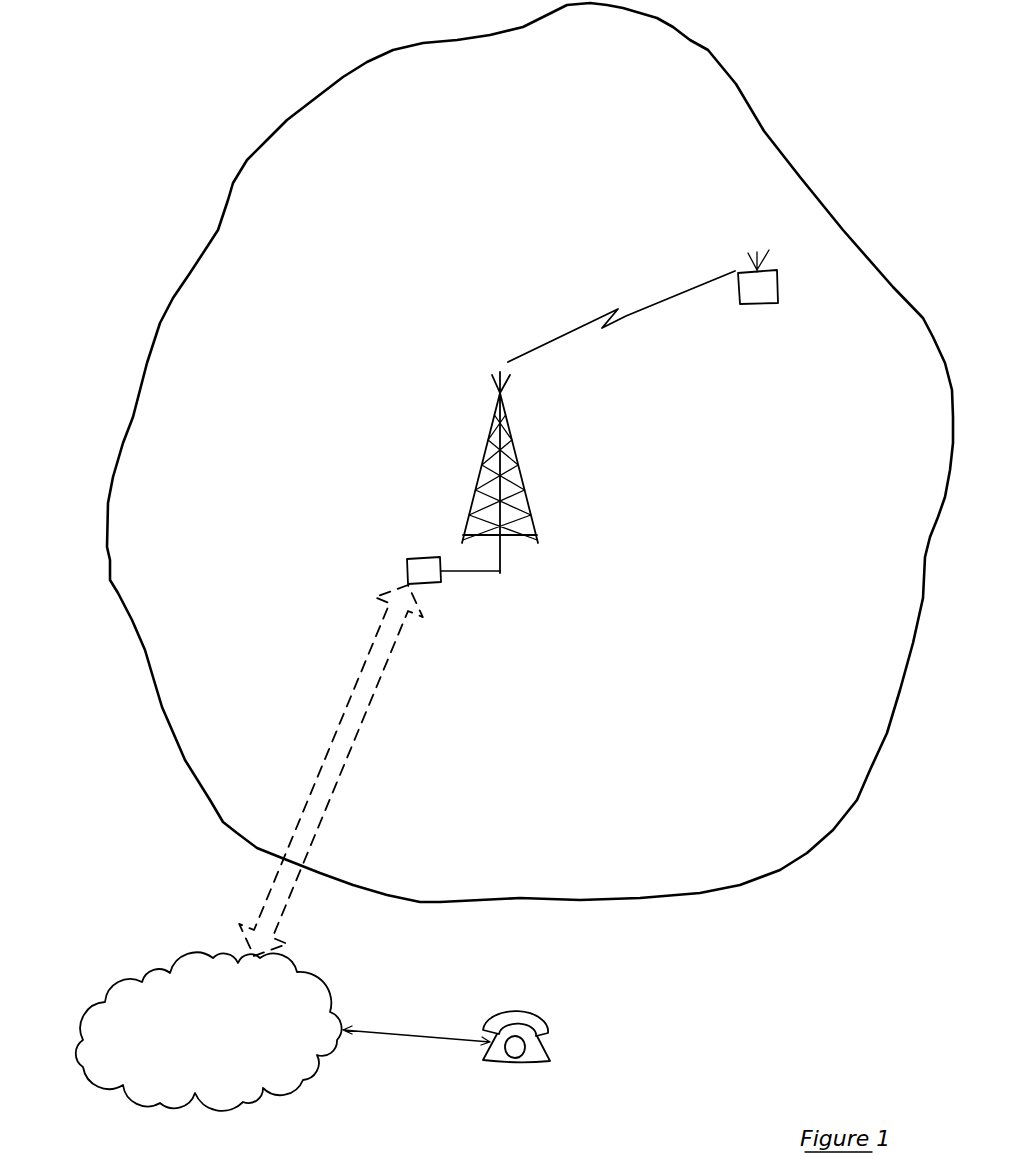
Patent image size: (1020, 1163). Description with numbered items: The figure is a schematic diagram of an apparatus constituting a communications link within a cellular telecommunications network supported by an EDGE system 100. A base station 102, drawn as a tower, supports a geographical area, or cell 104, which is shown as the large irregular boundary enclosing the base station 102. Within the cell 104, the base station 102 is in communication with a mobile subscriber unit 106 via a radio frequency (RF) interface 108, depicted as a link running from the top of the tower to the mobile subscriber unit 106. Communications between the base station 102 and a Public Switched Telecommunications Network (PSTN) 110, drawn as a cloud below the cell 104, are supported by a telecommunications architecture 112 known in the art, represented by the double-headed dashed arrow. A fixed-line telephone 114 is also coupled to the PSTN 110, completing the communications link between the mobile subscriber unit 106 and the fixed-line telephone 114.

The EDGE system 100 is at (797, 51).
The base station 102 is at (437, 512).
The cell 104 is at (106, 547).
The mobile subscriber unit 106 is at (778, 297).
The radio frequency (RF) interface 108 is at (633, 316).
The Public Switched Telecommunications Network (PSTN) 110 is at (252, 1103).
The telecommunications architecture 112 is at (340, 778).
The fixed-line telephone 114 is at (538, 1060).